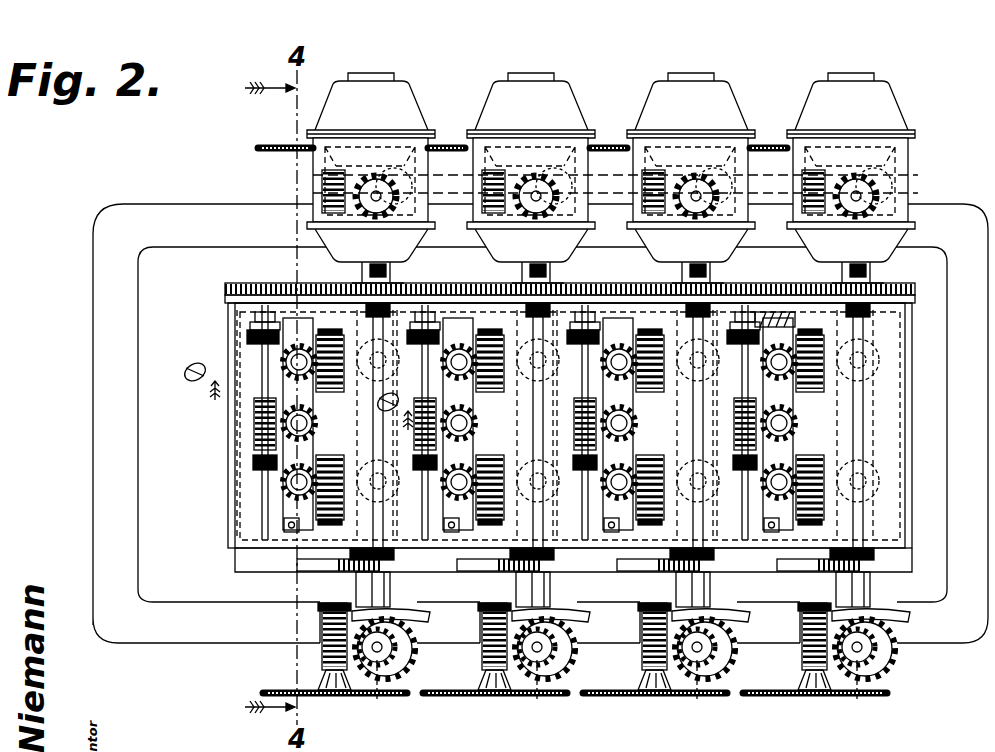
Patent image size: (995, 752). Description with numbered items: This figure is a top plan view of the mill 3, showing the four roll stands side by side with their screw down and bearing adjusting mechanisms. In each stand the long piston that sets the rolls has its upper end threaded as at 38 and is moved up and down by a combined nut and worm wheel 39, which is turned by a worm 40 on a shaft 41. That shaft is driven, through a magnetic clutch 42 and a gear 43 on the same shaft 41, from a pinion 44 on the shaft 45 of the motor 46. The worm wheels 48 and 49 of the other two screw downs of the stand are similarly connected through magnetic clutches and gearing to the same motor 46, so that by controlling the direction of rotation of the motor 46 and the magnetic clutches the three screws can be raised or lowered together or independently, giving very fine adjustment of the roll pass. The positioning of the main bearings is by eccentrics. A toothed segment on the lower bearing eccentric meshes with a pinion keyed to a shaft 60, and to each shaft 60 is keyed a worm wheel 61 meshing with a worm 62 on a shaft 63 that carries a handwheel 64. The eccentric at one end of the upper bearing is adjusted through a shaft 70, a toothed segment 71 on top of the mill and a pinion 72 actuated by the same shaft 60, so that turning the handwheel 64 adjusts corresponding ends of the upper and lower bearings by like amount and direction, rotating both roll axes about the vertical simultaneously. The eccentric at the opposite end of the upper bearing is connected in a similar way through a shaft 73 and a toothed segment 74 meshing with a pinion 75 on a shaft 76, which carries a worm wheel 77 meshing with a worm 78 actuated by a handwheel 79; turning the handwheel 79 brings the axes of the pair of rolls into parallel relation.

The mill 3 is at (140, 270).
The threaded upper end of piston 38 is at (765, 482).
The combined nut and worm wheel 39 is at (750, 368).
The worm 40 is at (832, 380).
The shaft 41 is at (760, 420).
The magnetic clutch 42 is at (800, 318).
The gear 43 is at (820, 283).
The pinion 44 is at (865, 292).
The motor shaft 45 is at (860, 452).
The motor 46 is at (740, 100).
The worm wheel 48 is at (800, 458).
The worm wheel 49 is at (766, 525).
The shaft 60 is at (882, 642).
The worm wheel 61 is at (642, 652).
The worm 62 is at (802, 650).
The shaft 63 is at (805, 698).
The handwheel 64 is at (712, 697).
The shaft 70 is at (880, 481).
The toothed segment 71 is at (752, 618).
The pinion 72 is at (880, 672).
The shaft 73 is at (880, 360).
The toothed segment 74 is at (631, 201).
The pinion 75 is at (628, 177).
The shaft 76 is at (905, 158).
The worm wheel 77 is at (862, 170).
The worm 78 is at (805, 185).
The handwheel 79 is at (770, 145).